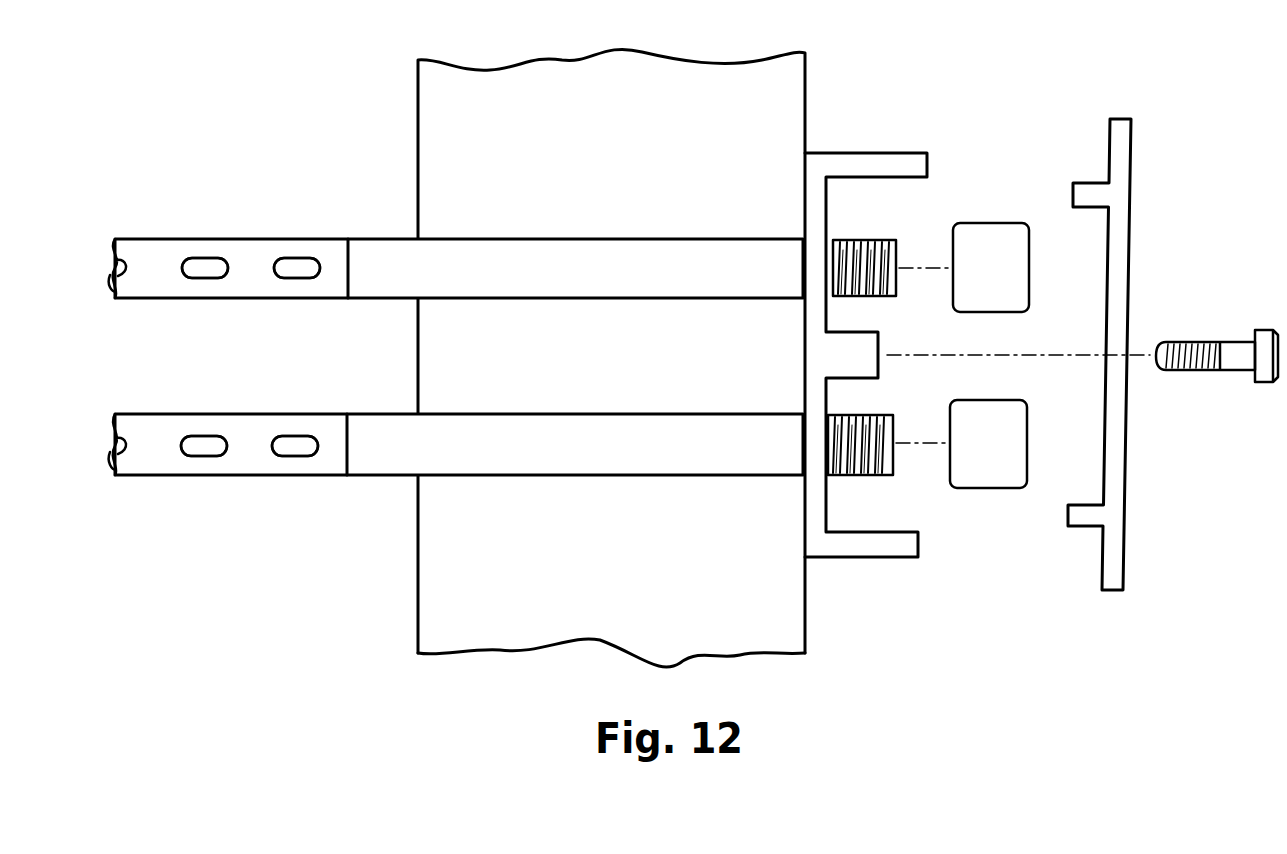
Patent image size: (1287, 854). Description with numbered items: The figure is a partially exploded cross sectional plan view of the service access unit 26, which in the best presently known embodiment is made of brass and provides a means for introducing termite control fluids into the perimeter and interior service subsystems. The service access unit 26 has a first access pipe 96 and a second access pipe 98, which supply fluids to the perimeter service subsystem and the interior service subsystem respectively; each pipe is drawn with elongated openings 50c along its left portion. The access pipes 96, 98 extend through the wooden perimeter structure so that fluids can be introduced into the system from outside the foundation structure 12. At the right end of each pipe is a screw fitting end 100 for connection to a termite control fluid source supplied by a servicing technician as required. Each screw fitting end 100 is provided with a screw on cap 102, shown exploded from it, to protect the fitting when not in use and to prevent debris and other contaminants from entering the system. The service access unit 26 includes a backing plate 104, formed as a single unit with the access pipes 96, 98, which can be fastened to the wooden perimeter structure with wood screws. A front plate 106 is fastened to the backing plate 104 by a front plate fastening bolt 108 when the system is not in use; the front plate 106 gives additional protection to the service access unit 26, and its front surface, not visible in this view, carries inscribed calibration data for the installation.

The foundation structure 12 is at (432, 598).
The service access unit 26 is at (224, 139).
The slot 50c is at (172, 253).
The first access pipe 96 is at (617, 284).
The second access pipe 98 is at (615, 459).
The screw fitting end 100 is at (885, 299).
The screw on cap 102 is at (1020, 284).
The backing plate 104 is at (848, 168).
The front plate 106 is at (1115, 548).
The front plate fastening bolt 108 is at (1236, 350).